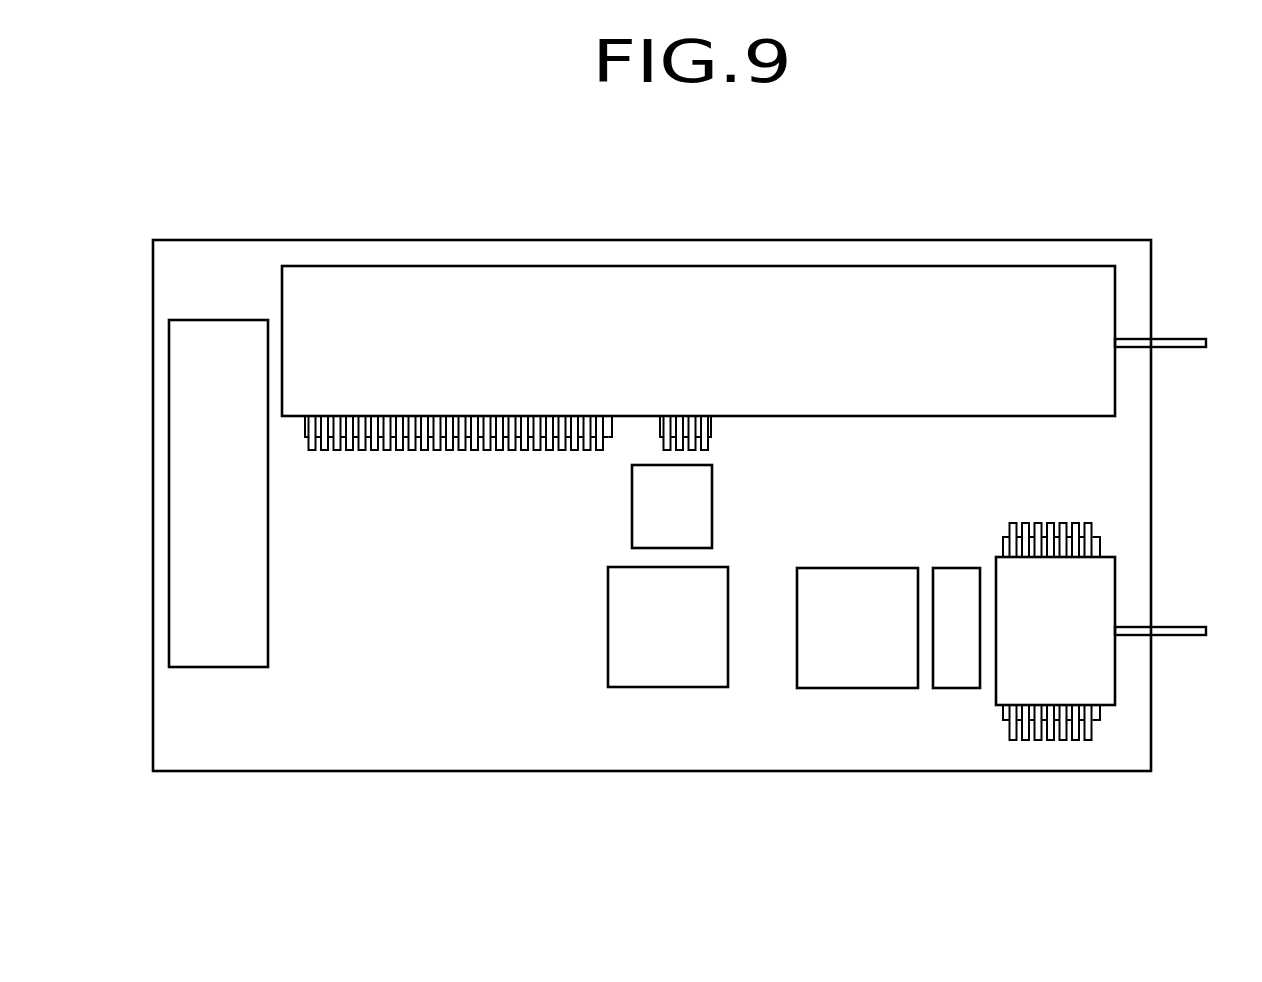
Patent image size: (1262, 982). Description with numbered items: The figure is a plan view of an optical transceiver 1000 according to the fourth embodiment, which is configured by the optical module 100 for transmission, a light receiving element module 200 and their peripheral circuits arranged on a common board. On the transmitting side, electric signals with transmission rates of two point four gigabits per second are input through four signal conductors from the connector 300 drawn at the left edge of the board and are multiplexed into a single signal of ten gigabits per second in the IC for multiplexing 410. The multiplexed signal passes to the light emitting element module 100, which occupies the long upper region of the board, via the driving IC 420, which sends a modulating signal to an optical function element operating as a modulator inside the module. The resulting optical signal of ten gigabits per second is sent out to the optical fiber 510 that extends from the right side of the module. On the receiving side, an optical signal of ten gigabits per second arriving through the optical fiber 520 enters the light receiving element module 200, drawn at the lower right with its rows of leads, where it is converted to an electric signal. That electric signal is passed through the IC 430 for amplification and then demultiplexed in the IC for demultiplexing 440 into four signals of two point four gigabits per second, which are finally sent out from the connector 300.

The optical transceiver 1000 is at (1197, 193).
The optical module 100 is at (935, 290).
The light receiving element module 200 is at (1078, 670).
The connector 300 is at (214, 630).
The IC for multiplexing 410 is at (665, 675).
The driving IC 420 is at (659, 503).
The IC for amplification 430 is at (955, 675).
The IC for demultiplexing 440 is at (852, 675).
The optical fiber 510 is at (1178, 339).
The optical fiber 520 is at (1177, 627).